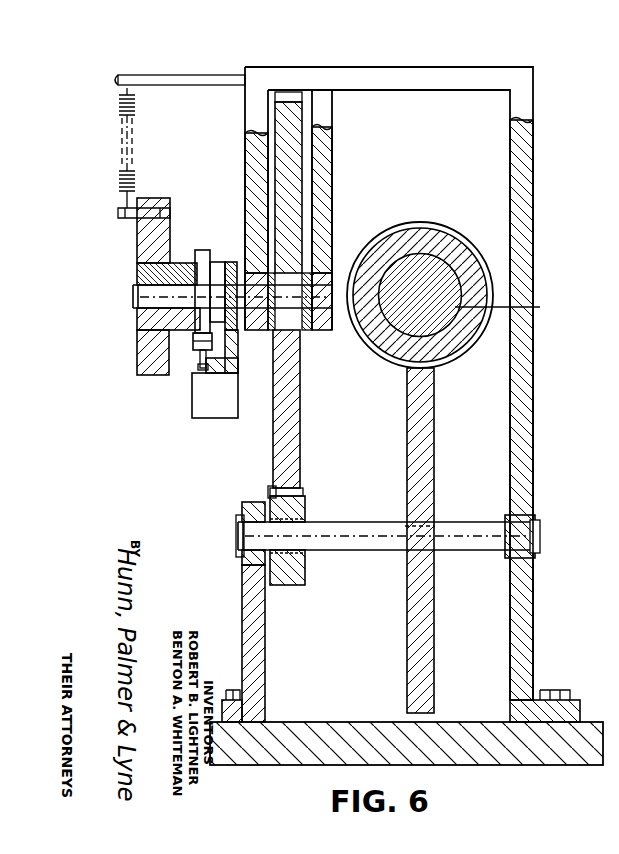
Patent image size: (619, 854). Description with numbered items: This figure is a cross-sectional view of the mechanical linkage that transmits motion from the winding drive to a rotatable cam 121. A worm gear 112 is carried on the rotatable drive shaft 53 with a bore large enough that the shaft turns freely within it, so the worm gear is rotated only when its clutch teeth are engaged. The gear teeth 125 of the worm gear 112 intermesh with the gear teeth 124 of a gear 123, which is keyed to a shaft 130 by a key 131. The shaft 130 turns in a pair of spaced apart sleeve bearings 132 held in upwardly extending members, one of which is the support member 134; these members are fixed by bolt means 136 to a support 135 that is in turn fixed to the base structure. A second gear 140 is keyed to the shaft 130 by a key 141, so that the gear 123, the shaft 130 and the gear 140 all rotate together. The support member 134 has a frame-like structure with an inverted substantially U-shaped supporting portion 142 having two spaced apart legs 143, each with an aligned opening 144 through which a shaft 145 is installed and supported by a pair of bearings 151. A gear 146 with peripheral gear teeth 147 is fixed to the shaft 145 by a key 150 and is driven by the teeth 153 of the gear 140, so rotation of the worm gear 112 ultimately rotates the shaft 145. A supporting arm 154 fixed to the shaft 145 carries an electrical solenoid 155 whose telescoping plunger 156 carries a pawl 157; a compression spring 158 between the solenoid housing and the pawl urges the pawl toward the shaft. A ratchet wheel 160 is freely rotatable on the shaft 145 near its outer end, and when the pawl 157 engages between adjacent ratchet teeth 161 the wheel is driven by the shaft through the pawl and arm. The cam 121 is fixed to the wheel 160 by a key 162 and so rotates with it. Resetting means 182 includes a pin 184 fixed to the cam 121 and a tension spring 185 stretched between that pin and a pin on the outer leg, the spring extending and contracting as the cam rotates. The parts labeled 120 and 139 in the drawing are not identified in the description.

The drive shaft 53 is at (512, 307).
The worm gear 112 is at (428, 222).
The drive assembly 120 is at (200, 524).
The rotatable cam 121 is at (142, 362).
The gear 123 is at (205, 56).
The gear teeth 124 is at (432, 362).
The gear teeth 125 is at (462, 230).
The shaft 130 is at (452, 522).
The key 131 is at (420, 525).
The sleeve bearings 132 is at (246, 550).
The support member 134 is at (530, 622).
The support 135 is at (500, 760).
The bolt means 136 is at (238, 698).
The left upright 139 is at (246, 608).
The gear 140 is at (300, 565).
The key 141 is at (300, 524).
The U-shaped supporting portion 142 is at (289, 88).
The supporting legs 143 is at (246, 122).
The opening 144 is at (318, 272).
The shaft 145 is at (150, 297).
The gear 146 is at (298, 428).
The peripheral gear teeth 147 is at (300, 492).
The key 150 is at (305, 262).
The bearings 151 is at (256, 322).
The teeth 153 is at (270, 492).
The supporting arm 154 is at (232, 360).
The electrical solenoid 155 is at (226, 415).
The telescoping plunger 156 is at (197, 352).
The pawl 157 is at (200, 355).
The compression spring 158 is at (205, 368).
The ratchet wheel 160 is at (216, 262).
The ratchet teeth 161 is at (198, 250).
The key 162 is at (150, 266).
The resetting means 182 is at (120, 152).
The pin 184 is at (118, 213).
The tension spring 185 is at (120, 110).